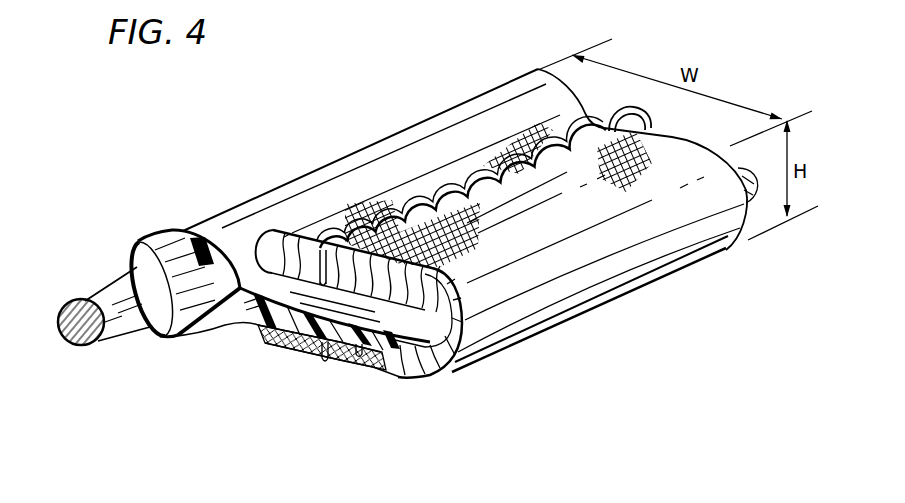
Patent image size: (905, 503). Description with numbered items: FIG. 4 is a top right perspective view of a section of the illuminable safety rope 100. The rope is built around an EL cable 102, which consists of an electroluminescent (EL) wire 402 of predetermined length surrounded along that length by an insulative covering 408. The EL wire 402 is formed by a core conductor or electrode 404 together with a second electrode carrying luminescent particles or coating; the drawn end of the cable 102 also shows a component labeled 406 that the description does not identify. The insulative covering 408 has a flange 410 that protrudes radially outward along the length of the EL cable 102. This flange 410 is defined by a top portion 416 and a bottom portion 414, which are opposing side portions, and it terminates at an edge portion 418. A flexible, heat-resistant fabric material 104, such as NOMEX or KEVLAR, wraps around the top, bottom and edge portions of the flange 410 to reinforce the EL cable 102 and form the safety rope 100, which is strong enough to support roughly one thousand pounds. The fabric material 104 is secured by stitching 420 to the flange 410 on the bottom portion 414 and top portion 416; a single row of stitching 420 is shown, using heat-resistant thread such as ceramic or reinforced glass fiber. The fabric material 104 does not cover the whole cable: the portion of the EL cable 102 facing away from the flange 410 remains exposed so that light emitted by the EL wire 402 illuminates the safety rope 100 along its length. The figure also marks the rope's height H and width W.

The safety rope 100 is at (656, 382).
The EL cable 102 is at (152, 199).
The fabric material 104 is at (683, 248).
The electroluminescent (EL) wire 402 is at (193, 398).
The core conductor or electrode 404 is at (105, 327).
The collar 406 is at (180, 330).
The insulative covering 408 is at (243, 216).
The flange 410 is at (247, 306).
The bottom portion 414 is at (353, 362).
The top portion 416 is at (370, 352).
The edge portion 418 is at (413, 368).
The stitching 420 is at (465, 178).